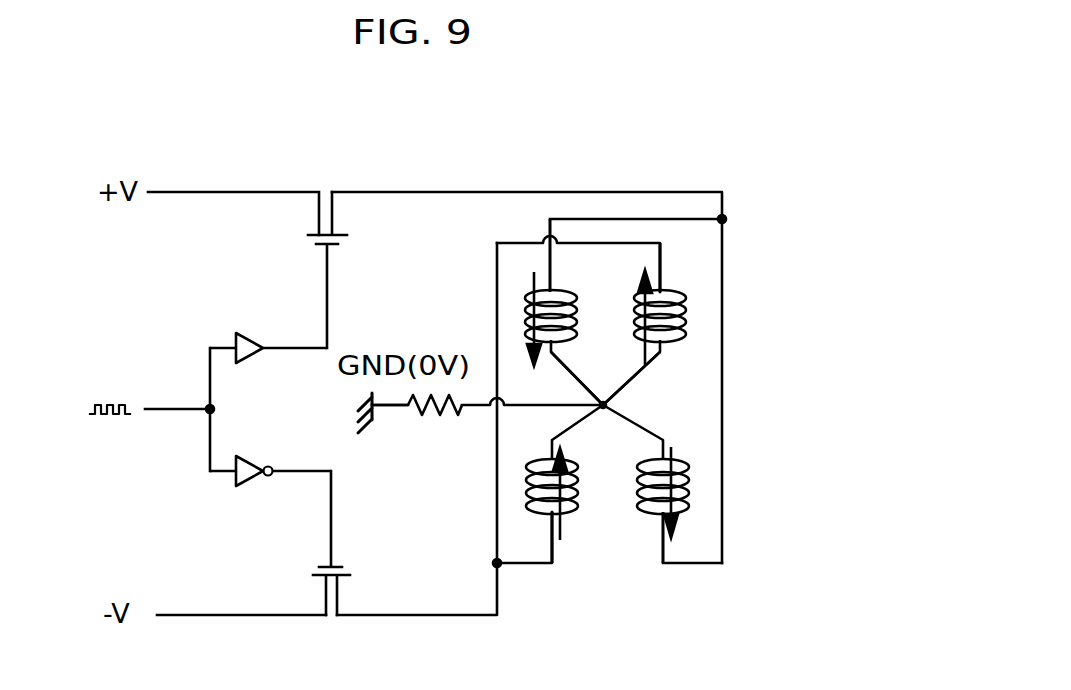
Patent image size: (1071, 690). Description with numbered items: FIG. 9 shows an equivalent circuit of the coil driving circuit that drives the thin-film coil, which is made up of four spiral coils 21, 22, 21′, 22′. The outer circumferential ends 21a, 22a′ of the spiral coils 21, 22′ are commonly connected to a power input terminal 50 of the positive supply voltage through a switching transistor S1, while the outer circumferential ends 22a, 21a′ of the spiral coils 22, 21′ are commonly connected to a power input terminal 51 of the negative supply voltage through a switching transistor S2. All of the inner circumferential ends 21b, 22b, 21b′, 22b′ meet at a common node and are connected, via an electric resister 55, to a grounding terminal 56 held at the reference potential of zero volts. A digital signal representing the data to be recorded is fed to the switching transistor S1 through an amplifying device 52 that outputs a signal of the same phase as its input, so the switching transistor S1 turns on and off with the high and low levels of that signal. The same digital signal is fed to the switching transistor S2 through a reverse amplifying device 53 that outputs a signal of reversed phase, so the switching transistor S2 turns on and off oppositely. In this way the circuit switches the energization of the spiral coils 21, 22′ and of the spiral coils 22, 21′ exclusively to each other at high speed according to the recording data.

The power input terminal of +V 50 is at (217, 190).
The power input terminal of −V 51 is at (217, 612).
The amplifying device 52 is at (255, 332).
The reverse amplifying device 53 is at (255, 454).
The electric resister 55 is at (443, 410).
The grounding terminal 56 is at (405, 410).
The switching transistor S1 is at (349, 233).
The switching transistor S2 is at (352, 571).
The spiral coil 21 is at (592, 325).
The spiral coil 22 is at (708, 327).
The outer circumferential end 21a is at (550, 269).
The outer circumferential end 22a is at (660, 269).
The inner circumferential end 21b is at (603, 405).
The inner circumferential end 22b is at (746, 385).
The spiral coil 21′ is at (582, 519).
The spiral coil 22′ is at (708, 500).
The outer circumferential end 21a′ is at (550, 566).
The outer circumferential end 22a′ is at (670, 566).
The inner circumferential end 21b′ is at (577, 432).
The inner circumferential end 22b′ is at (633, 432).